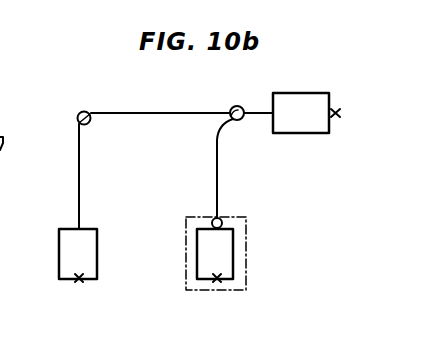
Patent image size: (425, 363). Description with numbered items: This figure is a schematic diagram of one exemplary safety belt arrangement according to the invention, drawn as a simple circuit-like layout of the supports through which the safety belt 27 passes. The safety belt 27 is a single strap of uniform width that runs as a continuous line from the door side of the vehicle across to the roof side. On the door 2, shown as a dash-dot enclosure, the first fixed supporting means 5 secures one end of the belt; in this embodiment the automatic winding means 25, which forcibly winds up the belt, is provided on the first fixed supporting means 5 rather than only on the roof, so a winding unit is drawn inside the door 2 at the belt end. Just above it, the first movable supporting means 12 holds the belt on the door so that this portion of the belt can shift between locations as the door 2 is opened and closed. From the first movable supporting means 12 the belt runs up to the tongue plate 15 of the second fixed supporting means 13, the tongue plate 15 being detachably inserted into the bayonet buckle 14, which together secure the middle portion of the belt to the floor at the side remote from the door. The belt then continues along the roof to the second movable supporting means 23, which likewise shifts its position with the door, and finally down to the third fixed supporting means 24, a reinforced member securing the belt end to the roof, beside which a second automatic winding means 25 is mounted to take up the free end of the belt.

The door 2 is at (193, 291).
The first fixed supporting means 5 is at (219, 283).
The first movable supporting means 12 is at (222, 223).
The second fixed supporting means 13 is at (340, 115).
The bayonet buckle 14 is at (290, 93).
The tongue plate 15 is at (242, 106).
The second movable supporting means 23 is at (88, 111).
The third fixed supporting means 24 is at (80, 284).
The automatic winding means 25 is at (59, 263).
The safety belt 27 is at (79, 165).